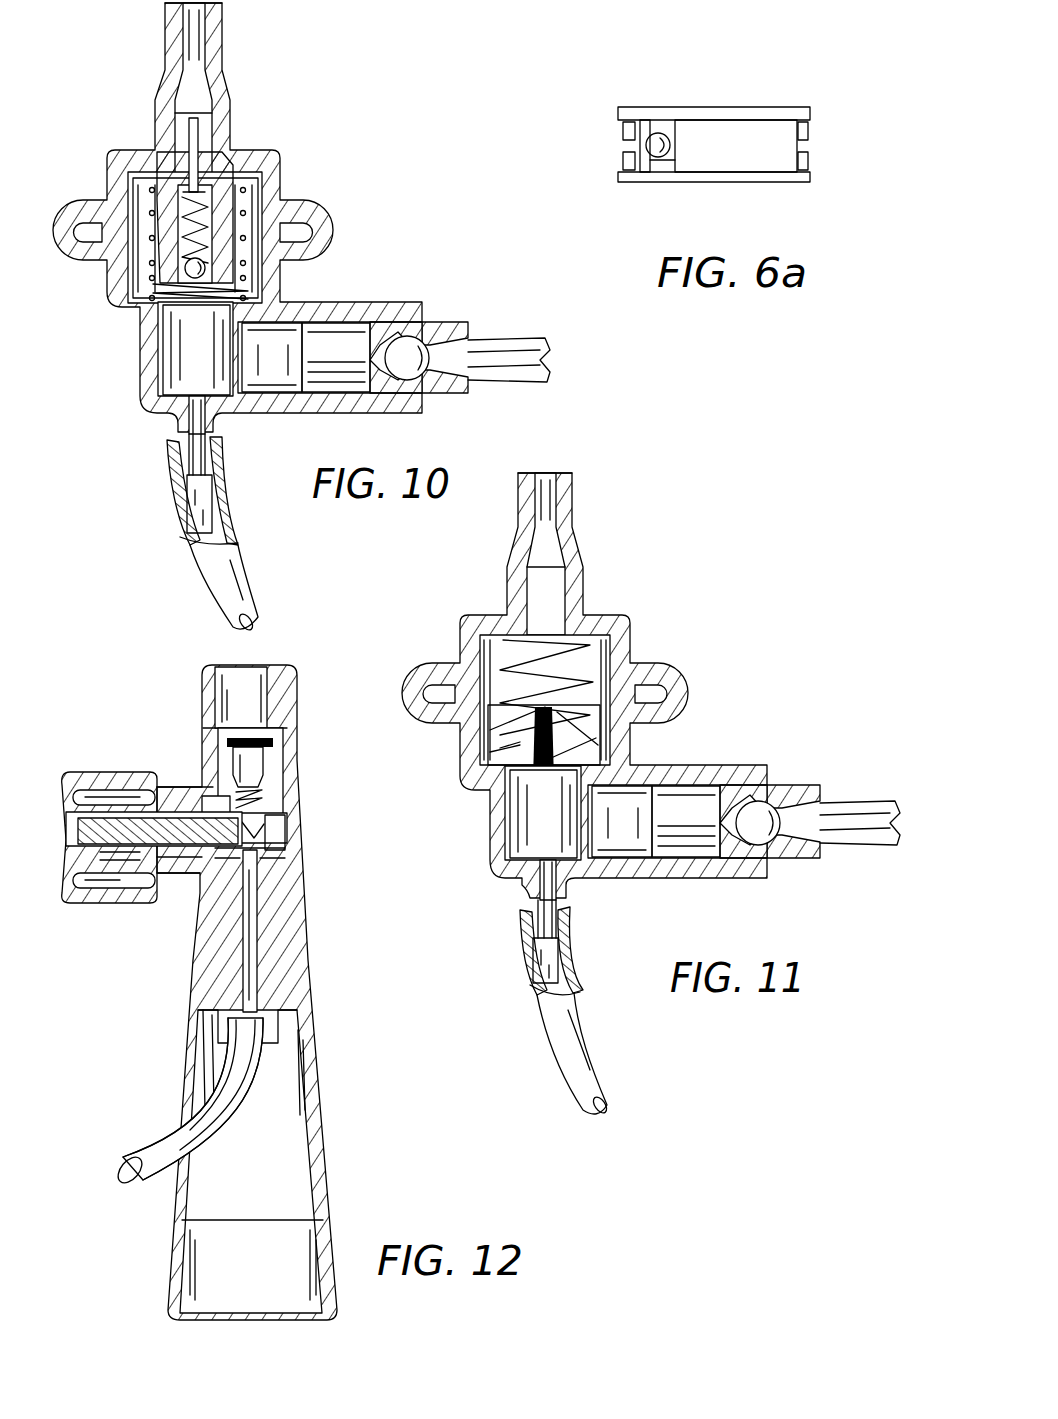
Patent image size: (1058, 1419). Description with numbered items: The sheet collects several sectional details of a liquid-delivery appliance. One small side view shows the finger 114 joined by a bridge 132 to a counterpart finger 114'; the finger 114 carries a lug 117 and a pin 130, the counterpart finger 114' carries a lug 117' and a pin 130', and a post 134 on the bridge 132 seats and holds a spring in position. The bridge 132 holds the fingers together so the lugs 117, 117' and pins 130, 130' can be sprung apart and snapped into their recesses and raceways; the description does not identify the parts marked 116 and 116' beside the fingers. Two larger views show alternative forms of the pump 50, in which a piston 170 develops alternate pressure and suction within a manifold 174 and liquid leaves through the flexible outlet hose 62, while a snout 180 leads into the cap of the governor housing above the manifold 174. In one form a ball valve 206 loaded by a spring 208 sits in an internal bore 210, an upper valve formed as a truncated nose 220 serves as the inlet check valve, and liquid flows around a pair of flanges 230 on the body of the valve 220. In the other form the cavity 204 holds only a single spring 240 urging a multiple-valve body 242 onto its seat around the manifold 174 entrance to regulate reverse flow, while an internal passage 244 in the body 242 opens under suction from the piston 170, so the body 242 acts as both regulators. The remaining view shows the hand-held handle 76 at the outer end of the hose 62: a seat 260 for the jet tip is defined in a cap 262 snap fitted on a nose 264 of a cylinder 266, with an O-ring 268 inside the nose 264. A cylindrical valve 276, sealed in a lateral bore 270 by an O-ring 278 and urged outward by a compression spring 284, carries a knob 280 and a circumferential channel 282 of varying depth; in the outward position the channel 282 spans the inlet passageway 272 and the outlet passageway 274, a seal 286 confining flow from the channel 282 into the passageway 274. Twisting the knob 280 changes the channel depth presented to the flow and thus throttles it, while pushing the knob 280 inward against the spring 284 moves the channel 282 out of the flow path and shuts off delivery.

In FIG. 10, the pump 50 is at (135, 132).
In FIG. 11, the pump 50 is at (500, 609).
In FIG. 10, the outlet hose 62 is at (243, 566).
In FIG. 11, the outlet hose 62 is at (576, 1002).
In FIG. 12, the outlet hose 62 is at (140, 1142).
In FIG. 10, the piston 170 is at (430, 322).
In FIG. 11, the piston 170 is at (786, 785).
In FIG. 11, the manifold 174 is at (578, 875).
In FIG. 10, the snout 180 is at (222, 40).
In FIG. 11, the snout 180 is at (572, 520).
In FIG. 11, the channel 204 is at (612, 735).
In FIG. 10, the ball valve 206 is at (162, 328).
In FIG. 10, the spring 208 is at (184, 270).
In FIG. 10, the internal bore 210 is at (252, 282).
In FIG. 10, the truncated nose valve 220 is at (205, 172).
In FIG. 10, the flanges 230 is at (262, 182).
In FIG. 11, the spring 240 is at (572, 640).
In FIG. 11, the multiple-valve body 242 is at (495, 760).
In FIG. 11, the internal passage 244 is at (505, 742).
In FIG. 12, the seat 260 is at (258, 670).
In FIG. 12, the cap 262 is at (297, 690).
In FIG. 12, the nose 264 is at (264, 770).
In FIG. 12, the cylinder 266 is at (272, 840).
In FIG. 12, the O-ring 268 is at (275, 742).
In FIG. 12, the bore 270 is at (198, 910).
In FIG. 12, the inlet passageway 272 is at (255, 945).
In FIG. 12, the outlet passageway 274 is at (264, 805).
In FIG. 12, the cylindrical valve 276 is at (200, 870).
In FIG. 12, the O-ring 278 is at (200, 800).
In FIG. 12, the knob 280 is at (80, 905).
In FIG. 12, the channel 282 is at (270, 860).
In FIG. 12, the compression spring 284 is at (280, 852).
In FIG. 12, the seal 286 is at (218, 790).
In FIG. 12, the hand-held handle 76 is at (302, 741).
In FIG. 6A, the finger 114 is at (714, 196).
In FIG. 6A, the counterpart finger 114' is at (714, 92).
In FIG. 6A, the lower rail 116 is at (610, 191).
In FIG. 6A, the upper rail 116' is at (641, 119).
In FIG. 6A, the lug 117 is at (586, 172).
In FIG. 6A, the lug 117' is at (587, 126).
In FIG. 6A, the pin 130 is at (800, 186).
In FIG. 6A, the pin 130' is at (789, 102).
In FIG. 6A, the bridge 132 is at (655, 158).
In FIG. 6A, the post 134 is at (676, 145).